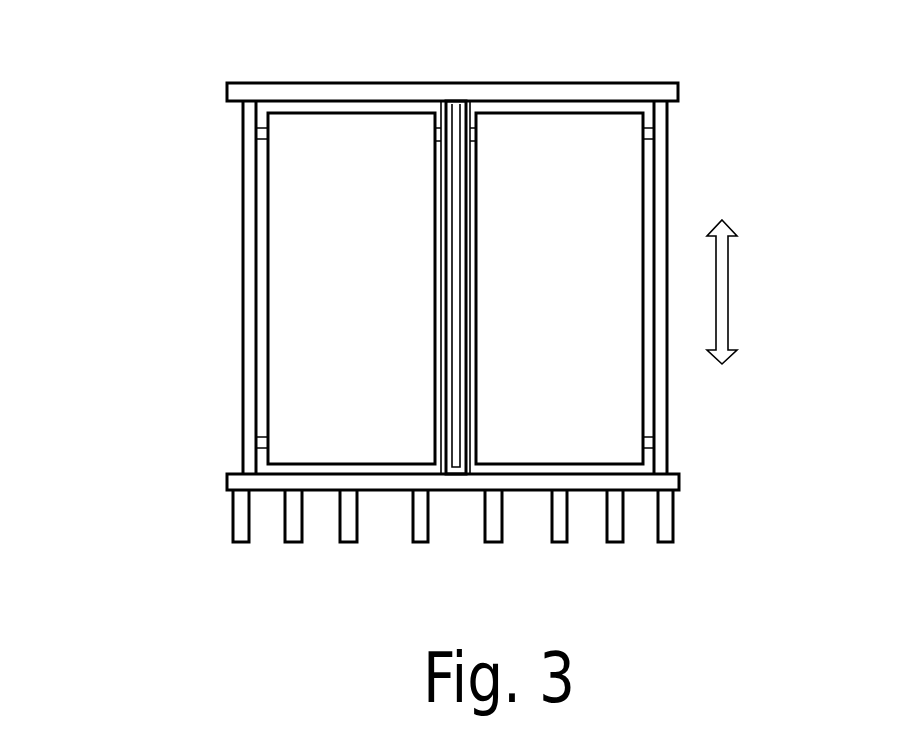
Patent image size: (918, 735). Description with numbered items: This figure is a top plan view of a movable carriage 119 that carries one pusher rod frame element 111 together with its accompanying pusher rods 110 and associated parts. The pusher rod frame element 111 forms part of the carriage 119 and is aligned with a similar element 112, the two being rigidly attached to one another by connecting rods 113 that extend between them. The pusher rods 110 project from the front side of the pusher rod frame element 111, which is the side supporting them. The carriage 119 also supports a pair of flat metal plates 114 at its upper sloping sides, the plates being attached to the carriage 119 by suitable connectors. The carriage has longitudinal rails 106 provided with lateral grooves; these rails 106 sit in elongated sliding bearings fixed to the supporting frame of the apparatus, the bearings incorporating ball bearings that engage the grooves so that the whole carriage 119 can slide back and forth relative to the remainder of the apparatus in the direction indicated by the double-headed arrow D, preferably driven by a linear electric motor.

The carriage 119 is at (178, 101).
The similar element 112 is at (585, 83).
The pusher rod frame element 111 is at (232, 481).
The pusher rods 110 is at (238, 528).
The connecting rods 113 is at (252, 174).
The flat metal plates 114 is at (280, 300).
The longitudinal rails 106 is at (455, 472).